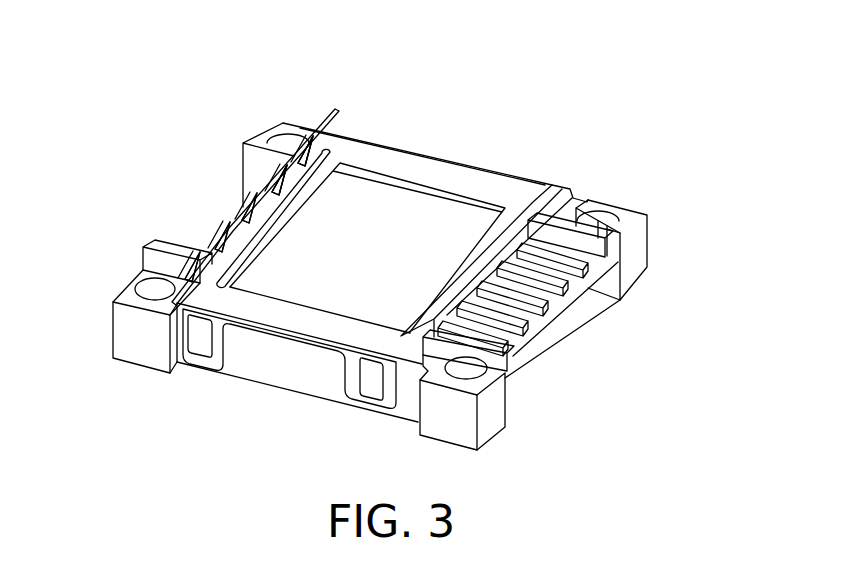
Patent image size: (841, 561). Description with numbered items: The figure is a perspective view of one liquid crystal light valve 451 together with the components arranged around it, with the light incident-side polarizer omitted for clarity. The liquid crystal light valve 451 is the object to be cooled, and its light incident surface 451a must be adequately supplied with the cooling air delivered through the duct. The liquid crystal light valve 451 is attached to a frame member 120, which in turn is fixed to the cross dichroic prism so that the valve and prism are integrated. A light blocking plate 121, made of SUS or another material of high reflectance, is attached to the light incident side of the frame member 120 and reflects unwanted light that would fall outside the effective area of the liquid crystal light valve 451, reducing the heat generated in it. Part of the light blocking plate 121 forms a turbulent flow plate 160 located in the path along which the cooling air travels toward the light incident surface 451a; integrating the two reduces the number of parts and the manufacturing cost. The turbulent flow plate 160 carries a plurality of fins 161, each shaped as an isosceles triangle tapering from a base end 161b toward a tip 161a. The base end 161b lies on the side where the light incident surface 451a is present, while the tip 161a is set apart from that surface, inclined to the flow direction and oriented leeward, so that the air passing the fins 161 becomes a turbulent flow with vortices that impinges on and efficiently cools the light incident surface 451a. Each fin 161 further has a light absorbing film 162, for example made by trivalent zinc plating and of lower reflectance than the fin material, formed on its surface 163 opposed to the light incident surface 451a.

The frame member 120 is at (640, 258).
The light blocking plate 121 is at (463, 178).
The turbulent flow plate 160 is at (202, 157).
The fin 161 is at (268, 157).
The tip 161a is at (311, 138).
The base end 161b is at (268, 165).
The light absorbing film 162 is at (176, 234).
The surface 163 is at (243, 215).
The liquid crystal light valve 451 is at (416, 192).
The light incident surface 451a is at (402, 207).